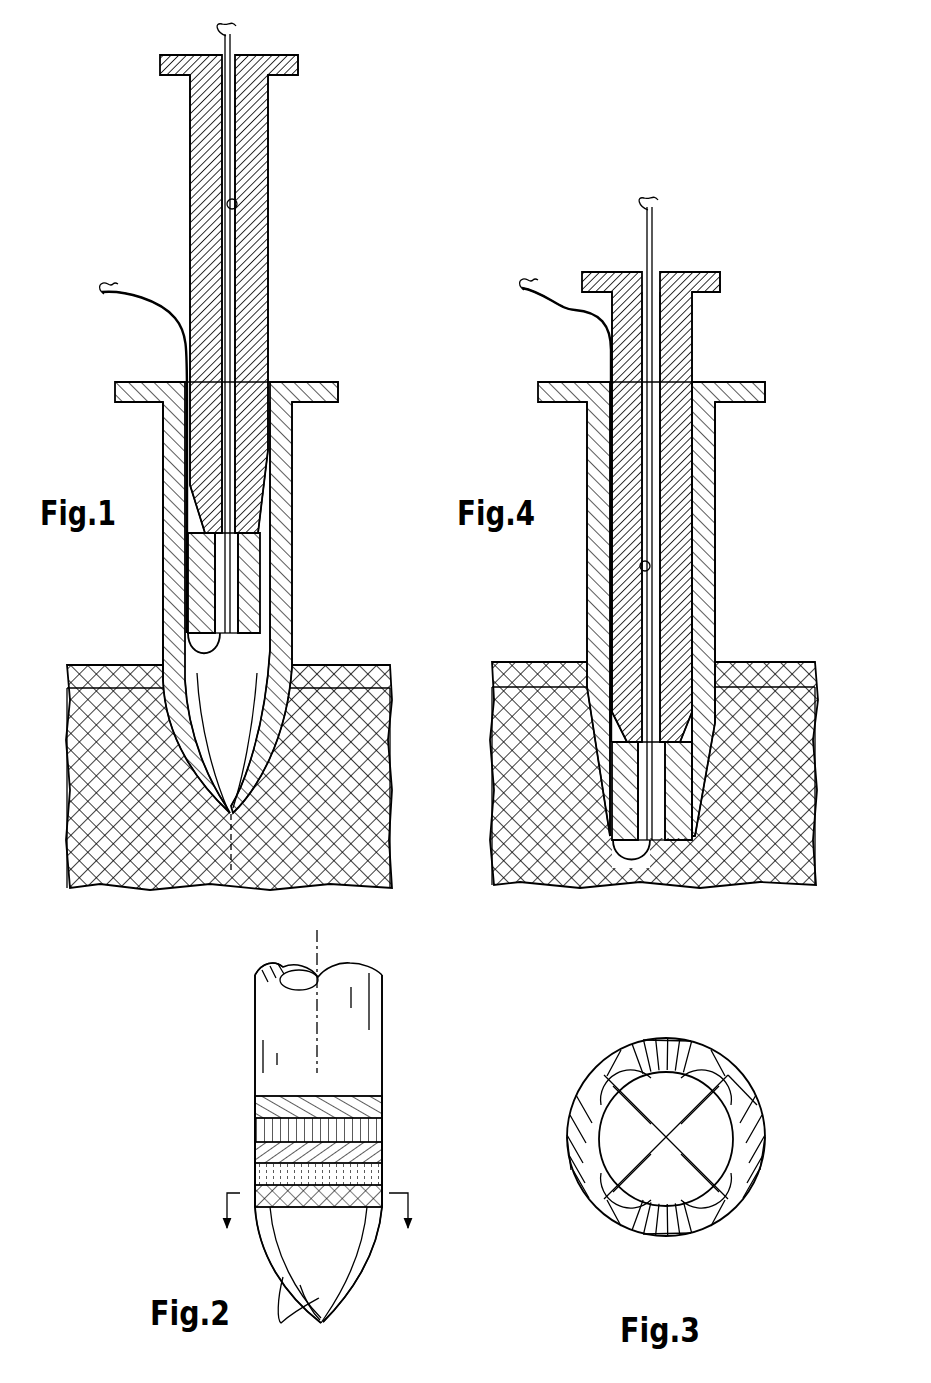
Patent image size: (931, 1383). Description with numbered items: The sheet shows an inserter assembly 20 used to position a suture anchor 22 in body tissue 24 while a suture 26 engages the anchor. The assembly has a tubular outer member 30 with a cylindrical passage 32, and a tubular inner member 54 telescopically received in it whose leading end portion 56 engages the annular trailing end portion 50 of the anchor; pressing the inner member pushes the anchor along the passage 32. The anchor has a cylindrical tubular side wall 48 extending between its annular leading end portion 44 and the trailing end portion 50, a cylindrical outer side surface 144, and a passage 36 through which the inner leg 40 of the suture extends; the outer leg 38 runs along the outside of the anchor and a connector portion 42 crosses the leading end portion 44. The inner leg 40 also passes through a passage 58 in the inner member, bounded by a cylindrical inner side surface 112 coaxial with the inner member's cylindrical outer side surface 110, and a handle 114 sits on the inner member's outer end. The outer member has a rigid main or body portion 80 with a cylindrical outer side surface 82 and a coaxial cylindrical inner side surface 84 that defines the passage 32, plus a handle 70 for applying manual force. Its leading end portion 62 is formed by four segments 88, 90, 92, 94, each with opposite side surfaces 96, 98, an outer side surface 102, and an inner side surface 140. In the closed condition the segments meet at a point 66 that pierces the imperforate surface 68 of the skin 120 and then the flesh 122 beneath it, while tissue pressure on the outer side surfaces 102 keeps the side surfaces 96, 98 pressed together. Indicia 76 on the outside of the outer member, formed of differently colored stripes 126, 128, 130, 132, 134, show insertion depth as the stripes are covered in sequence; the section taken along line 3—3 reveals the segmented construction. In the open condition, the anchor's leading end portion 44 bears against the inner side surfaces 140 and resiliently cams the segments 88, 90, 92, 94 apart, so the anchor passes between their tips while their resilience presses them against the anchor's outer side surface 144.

In FIG. 1, the inserter assembly 20 is at (342, 292).
In FIG. 4, the inserter assembly 20 is at (788, 488).
In FIG. 1, the suture anchor 22 is at (257, 565).
In FIG. 4, the suture anchor 22 is at (780, 885).
In FIG. 1, the body tissue 24 is at (92, 888).
In FIG. 4, the body tissue 24 is at (584, 890).
In FIG. 1, the suture 26 is at (103, 303).
In FIG. 4, the suture 26 is at (563, 313).
In FIG. 1, the tubular outer member 30 is at (294, 432).
In FIG. 4, the tubular outer member 30 is at (718, 541).
In FIG. 2, the tubular outer member 30 is at (252, 1028).
In FIG. 3, the tubular outer member 30 is at (768, 1123).
In FIG. 1, the passage 32 is at (277, 612).
In FIG. 4, the passage 32 is at (705, 579).
In FIG. 1, the passage 36 is at (220, 583).
In FIG. 4, the passage 36 is at (692, 812).
In FIG. 1, the outer leg 38 is at (160, 323).
In FIG. 4, the outer leg 38 is at (532, 284).
In FIG. 1, the inner leg 40 is at (233, 44).
In FIG. 4, the inner leg 40 is at (653, 233).
In FIG. 1, the connector portion 42 is at (196, 654).
In FIG. 4, the connector portion 42 is at (627, 864).
In FIG. 1, the leading end portion 44 is at (252, 602).
In FIG. 4, the leading end portion 44 is at (677, 842).
In FIG. 1, the cylindrical tubular side wall 48 is at (192, 612).
In FIG. 4, the cylindrical tubular side wall 48 is at (660, 782).
In FIG. 1, the trailing end portion 50 is at (262, 532).
In FIG. 4, the trailing end portion 50 is at (697, 742).
In FIG. 1, the tubular inner member 54 is at (270, 146).
In FIG. 4, the tubular inner member 54 is at (685, 507).
In FIG. 1, the leading end portion 56 is at (192, 490).
In FIG. 4, the leading end portion 56 is at (712, 718).
In FIG. 1, the passage 58 is at (237, 207).
In FIG. 4, the passage 58 is at (625, 549).
In FIG. 1, the leading end portion 62 is at (196, 748).
In FIG. 4, the leading end portion 62 is at (598, 768).
In FIG. 2, the leading end portion 62 is at (200, 1214).
In FIG. 3, the leading end portion 62 is at (756, 1066).
In FIG. 1, the point 66 is at (197, 870).
In FIG. 2, the point 66 is at (322, 1323).
In FIG. 1, the imperforate surface 68 is at (320, 662).
In FIG. 4, the imperforate surface 68 is at (561, 660).
In FIG. 1, the handle 70 is at (322, 382).
In FIG. 4, the handle 70 is at (762, 396).
In FIG. 2, the indicia 76 is at (400, 1130).
In FIG. 1, the main or body portion 80 is at (168, 559).
In FIG. 4, the main or body portion 80 is at (586, 453).
In FIG. 2, the main or body portion 80 is at (384, 1020).
In FIG. 1, the cylindrical outer side surface 82 is at (168, 442).
In FIG. 4, the cylindrical outer side surface 82 is at (716, 451).
In FIG. 2, the cylindrical outer side surface 82 is at (366, 990).
In FIG. 1, the cylindrical inner side surface 84 is at (273, 660).
In FIG. 4, the cylindrical inner side surface 84 is at (700, 475).
In FIG. 2, the cylindrical inner side surface 84 is at (294, 982).
In FIG. 1, the segment 88 is at (240, 724).
In FIG. 3, the segment 88 is at (676, 1038).
In FIG. 1, the segment 90 is at (265, 777).
In FIG. 4, the segment 90 is at (697, 752).
In FIG. 2, the segment 90 is at (364, 1250).
In FIG. 3, the segment 90 is at (766, 1150).
In FIG. 2, the segment 92 is at (328, 1266).
In FIG. 3, the segment 92 is at (653, 1240).
In FIG. 1, the segment 94 is at (190, 770).
In FIG. 4, the segment 94 is at (608, 746).
In FIG. 2, the segment 94 is at (272, 1256).
In FIG. 3, the segment 94 is at (566, 1171).
In FIG. 3, the side surface 96 is at (622, 1055).
In FIG. 3, the side surface 98 is at (692, 1090).
In FIG. 2, the outer side surface 102 is at (287, 1310).
In FIG. 3, the outer side surface 102 is at (652, 1040).
In FIG. 1, the cylindrical outer side surface 110 is at (190, 137).
In FIG. 4, the cylindrical outer side surface 110 is at (694, 357).
In FIG. 1, the cylindrical inner side surface 112 is at (228, 197).
In FIG. 4, the cylindrical inner side surface 112 is at (640, 567).
In FIG. 1, the handle 114 is at (160, 63).
In FIG. 4, the handle 114 is at (721, 279).
In FIG. 1, the skin 120 is at (75, 668).
In FIG. 4, the skin 120 is at (798, 672).
In FIG. 1, the flesh 122 is at (96, 842).
In FIG. 4, the flesh 122 is at (540, 884).
In FIG. 2, the stripe 126 is at (265, 1194).
In FIG. 2, the stripe 128 is at (265, 1172).
In FIG. 2, the stripe 130 is at (265, 1152).
In FIG. 2, the stripe 132 is at (265, 1130).
In FIG. 2, the stripe 134 is at (255, 1104).
In FIG. 1, the inner side surface 140 is at (168, 728).
In FIG. 3, the inner side surface 140 is at (676, 1098).
In FIG. 1, the cylindrical outer side surface 144 is at (258, 548).
In FIG. 4, the cylindrical outer side surface 144 is at (742, 885).
In FIG. 2, the section line 3— 3 is at (318, 1228).